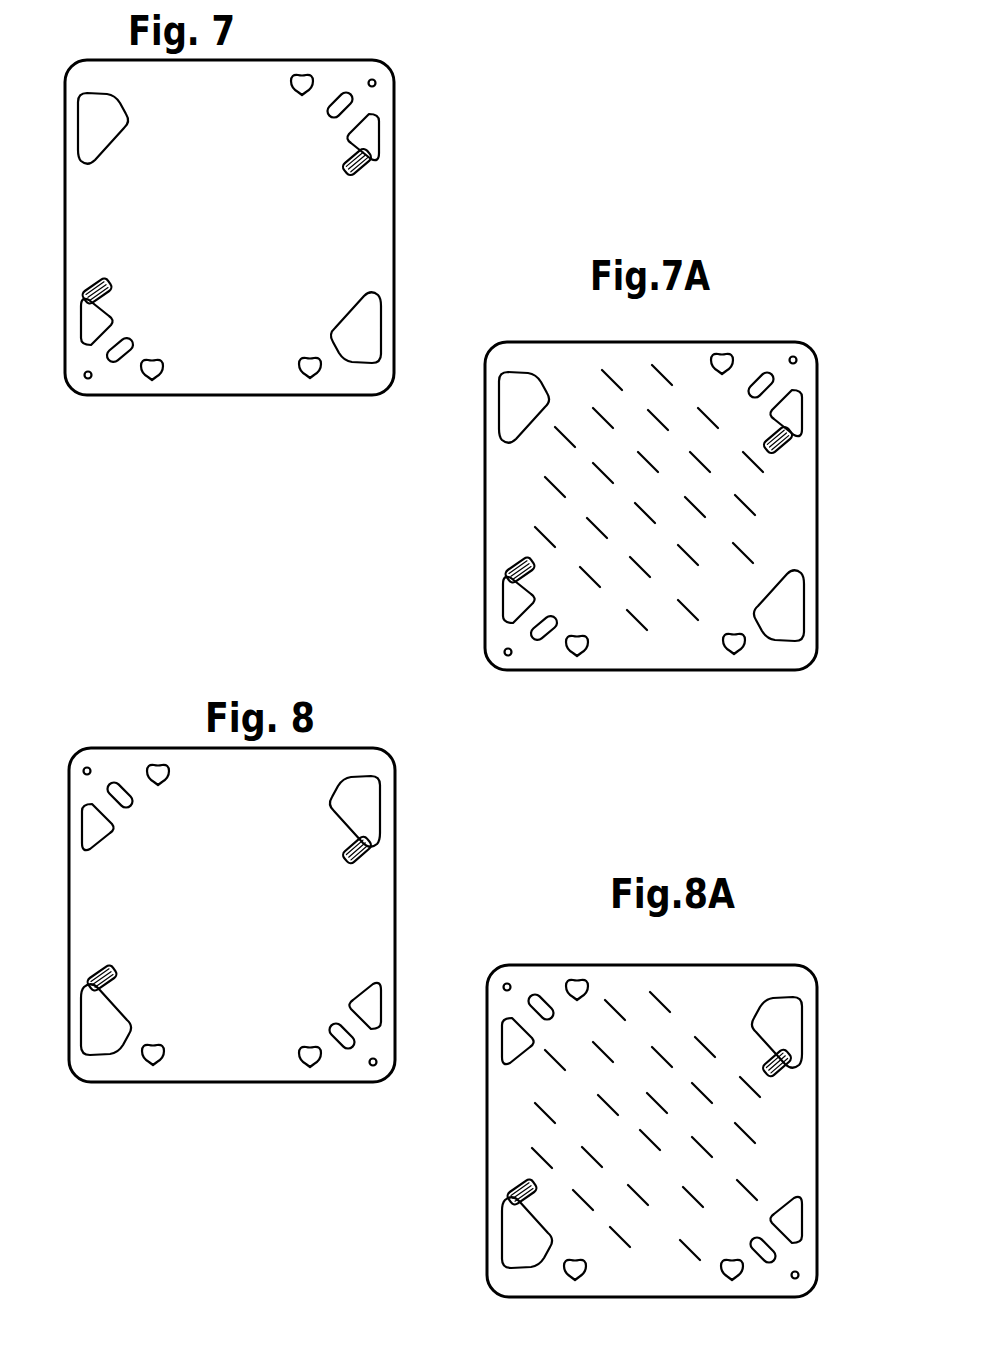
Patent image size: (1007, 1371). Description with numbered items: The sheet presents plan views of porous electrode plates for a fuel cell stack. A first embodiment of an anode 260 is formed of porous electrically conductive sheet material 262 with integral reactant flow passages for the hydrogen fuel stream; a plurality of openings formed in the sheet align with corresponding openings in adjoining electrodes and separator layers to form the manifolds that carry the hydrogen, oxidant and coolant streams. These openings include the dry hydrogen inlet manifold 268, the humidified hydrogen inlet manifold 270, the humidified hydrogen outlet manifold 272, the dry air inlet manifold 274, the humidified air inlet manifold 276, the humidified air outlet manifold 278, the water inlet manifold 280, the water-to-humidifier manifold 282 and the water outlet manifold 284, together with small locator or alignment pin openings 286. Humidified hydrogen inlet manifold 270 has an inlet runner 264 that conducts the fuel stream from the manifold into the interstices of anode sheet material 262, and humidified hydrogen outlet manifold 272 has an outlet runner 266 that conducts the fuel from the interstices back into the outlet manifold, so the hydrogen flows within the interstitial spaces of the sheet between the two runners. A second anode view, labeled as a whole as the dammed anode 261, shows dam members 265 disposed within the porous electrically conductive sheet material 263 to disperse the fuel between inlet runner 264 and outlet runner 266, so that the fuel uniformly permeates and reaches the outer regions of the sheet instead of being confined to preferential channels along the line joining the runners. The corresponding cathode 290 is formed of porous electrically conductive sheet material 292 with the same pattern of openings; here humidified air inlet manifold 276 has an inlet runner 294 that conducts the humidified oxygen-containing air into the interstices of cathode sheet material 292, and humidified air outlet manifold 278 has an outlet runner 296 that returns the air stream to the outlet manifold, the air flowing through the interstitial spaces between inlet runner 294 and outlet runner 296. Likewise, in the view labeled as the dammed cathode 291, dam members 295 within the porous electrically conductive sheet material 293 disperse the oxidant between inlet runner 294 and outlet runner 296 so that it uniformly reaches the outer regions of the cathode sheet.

In FIG. 7, the anode 260 is at (350, 40).
In FIG. 7A, the bearing plate with adhesive layer 261 is at (815, 292).
In FIG. 7, the porous electrically conductive sheet material 262 is at (381, 224).
In FIG. 7A, the porous electrically conductive sheet material 263 is at (803, 526).
In FIG. 7, the inlet runner 264 is at (366, 165).
In FIG. 7A, the inlet runner 264 is at (785, 446).
In FIG. 7A, the dam members 265 is at (551, 474).
In FIG. 7, the outlet runner 266 is at (112, 288).
In FIG. 7A, the outlet runner 266 is at (518, 565).
In FIG. 7, the dry hydrogen inlet manifold 268 is at (152, 373).
In FIG. 7A, the dry hydrogen inlet manifold 268 is at (580, 650).
In FIG. 8, the dry hydrogen inlet manifold 268 is at (310, 1062).
In FIG. 8A, the dry hydrogen inlet manifold 268 is at (732, 1275).
In FIG. 7, the humidified hydrogen inlet manifold 270 is at (366, 133).
In FIG. 7A, the humidified hydrogen inlet manifold 270 is at (786, 402).
In FIG. 8, the humidified hydrogen inlet manifold 270 is at (95, 820).
In FIG. 8A, the humidified hydrogen inlet manifold 270 is at (495, 1022).
In FIG. 7, the humidified hydrogen outlet manifold 272 is at (93, 327).
In FIG. 7A, the humidified hydrogen outlet manifold 272 is at (512, 603).
In FIG. 8, the humidified hydrogen outlet manifold 272 is at (370, 995).
In FIG. 8A, the humidified hydrogen outlet manifold 272 is at (790, 1215).
In FIG. 7, the dry air inlet manifold 274 is at (313, 372).
In FIG. 7A, the dry air inlet manifold 274 is at (736, 647).
In FIG. 8, the dry air inlet manifold 274 is at (157, 1060).
In FIG. 8A, the dry air inlet manifold 274 is at (577, 1275).
In FIG. 7, the humidified air inlet manifold 276 is at (102, 103).
In FIG. 7A, the humidified air inlet manifold 276 is at (522, 398).
In FIG. 8, the humidified air inlet manifold 276 is at (363, 808).
In FIG. 8A, the humidified air inlet manifold 276 is at (788, 1013).
In FIG. 7, the humidified air outlet manifold 278 is at (368, 317).
In FIG. 7A, the humidified air outlet manifold 278 is at (805, 623).
In FIG. 8, the humidified air outlet manifold 278 is at (108, 1035).
In FIG. 8A, the humidified air outlet manifold 278 is at (528, 1248).
In FIG. 7, the water inlet manifold 280 is at (303, 82).
In FIG. 7A, the water inlet manifold 280 is at (712, 358).
In FIG. 8, the water inlet manifold 280 is at (163, 772).
In FIG. 8A, the water inlet manifold 280 is at (588, 992).
In FIG. 7, the water-to-humidifier manifold 282 is at (118, 357).
In FIG. 7A, the water-to-humidifier manifold 282 is at (542, 635).
In FIG. 8, the water-to-humidifier manifold 282 is at (350, 1047).
In FIG. 8A, the water-to-humidifier manifold 282 is at (772, 1262).
In FIG. 7, the water outlet manifold 284 is at (348, 92).
In FIG. 7A, the water outlet manifold 284 is at (759, 372).
In FIG. 8, the water outlet manifold 284 is at (122, 790).
In FIG. 8A, the water outlet manifold 284 is at (547, 1002).
In FIG. 7, the locator or alignment pin openings 286 is at (377, 82).
In FIG. 7A, the locator or alignment pin openings 286 is at (793, 356).
In FIG. 8, the locator or alignment pin openings 286 is at (87, 768).
In FIG. 8A, the locator or alignment pin openings 286 is at (510, 984).
In FIG. 8, the cathode 290 is at (372, 690).
In FIG. 8A, the bearing plate with adhesive layer 291 is at (803, 941).
In FIG. 8, the porous electrically conductive sheet material 292 is at (373, 888).
In FIG. 8A, the porous electrically conductive sheet material 293 is at (795, 1122).
In FIG. 8, the inlet runner 294 is at (363, 857).
In FIG. 8A, the inlet runner 294 is at (793, 1073).
In FIG. 8A, the dam members 295 is at (558, 1055).
In FIG. 8, the outlet runner 296 is at (92, 975).
In FIG. 8A, the outlet runner 296 is at (507, 1197).